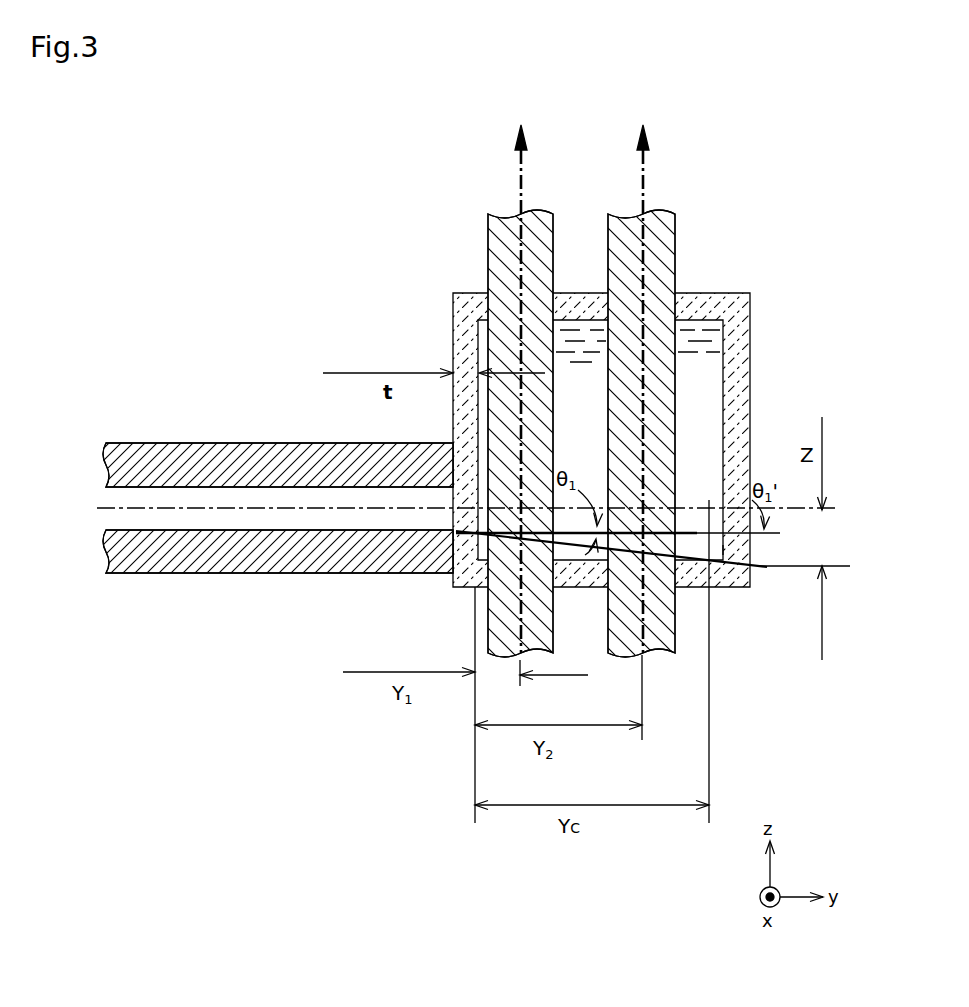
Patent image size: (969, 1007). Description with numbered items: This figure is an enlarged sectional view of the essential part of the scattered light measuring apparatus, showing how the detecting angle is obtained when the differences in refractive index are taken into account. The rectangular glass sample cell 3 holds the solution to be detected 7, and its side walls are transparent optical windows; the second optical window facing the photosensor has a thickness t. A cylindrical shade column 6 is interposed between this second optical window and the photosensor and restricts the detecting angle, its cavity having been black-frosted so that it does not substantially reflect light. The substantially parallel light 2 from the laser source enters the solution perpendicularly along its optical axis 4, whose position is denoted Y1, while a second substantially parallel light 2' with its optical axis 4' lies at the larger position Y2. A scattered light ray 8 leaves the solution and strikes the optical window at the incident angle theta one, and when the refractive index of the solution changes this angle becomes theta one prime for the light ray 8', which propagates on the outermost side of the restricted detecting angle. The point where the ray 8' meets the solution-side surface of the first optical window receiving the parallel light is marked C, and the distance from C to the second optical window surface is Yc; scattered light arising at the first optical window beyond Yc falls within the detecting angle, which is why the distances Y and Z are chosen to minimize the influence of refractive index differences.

The substantially parallel light 2 is at (476, 425).
The substantially parallel light 2' is at (661, 403).
The sample cell 3 is at (453, 307).
The optical axis 4 is at (540, 389).
The optical axis 4' is at (679, 389).
The shade column 6 is at (145, 443).
The solution to be detected 7 is at (685, 325).
The light ray 8 is at (618, 439).
The light ray 8' is at (653, 596).
The point of intersection C is at (723, 550).